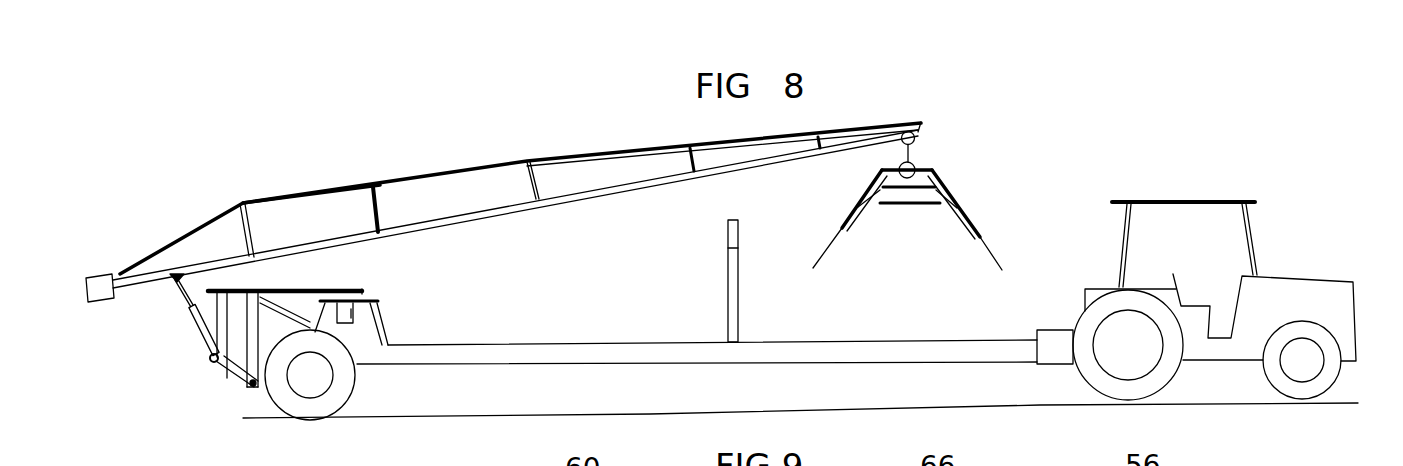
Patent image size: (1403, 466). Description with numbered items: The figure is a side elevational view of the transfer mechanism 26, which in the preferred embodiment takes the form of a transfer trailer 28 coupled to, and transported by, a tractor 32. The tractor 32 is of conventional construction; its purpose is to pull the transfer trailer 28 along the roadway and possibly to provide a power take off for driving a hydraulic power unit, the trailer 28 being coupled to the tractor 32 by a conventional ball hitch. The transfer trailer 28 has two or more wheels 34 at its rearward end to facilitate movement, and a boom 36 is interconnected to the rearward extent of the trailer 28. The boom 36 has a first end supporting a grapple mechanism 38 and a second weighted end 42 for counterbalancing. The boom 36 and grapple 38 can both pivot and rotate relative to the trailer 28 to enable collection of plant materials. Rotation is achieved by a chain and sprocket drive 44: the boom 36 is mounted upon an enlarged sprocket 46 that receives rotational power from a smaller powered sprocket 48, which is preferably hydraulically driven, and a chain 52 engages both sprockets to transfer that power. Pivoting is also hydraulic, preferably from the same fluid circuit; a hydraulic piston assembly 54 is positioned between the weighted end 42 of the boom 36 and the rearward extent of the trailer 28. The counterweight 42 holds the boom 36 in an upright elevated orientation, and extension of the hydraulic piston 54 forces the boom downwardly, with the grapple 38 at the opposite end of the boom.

The transfer mechanism 26 is at (1036, 165).
The transfer trailer 28 is at (475, 343).
The tractor 32 is at (1195, 199).
The wheels 34 is at (312, 411).
The boom 36 is at (587, 158).
The grapple mechanism 38 is at (949, 177).
The weighted end 42 is at (105, 277).
The chain and sprocket drive 44 is at (371, 268).
The enlarged sprocket 46 is at (240, 289).
The powered sprocket 48 is at (347, 288).
The chain 52 is at (293, 289).
The hydraulic piston assembly 54 is at (193, 332).